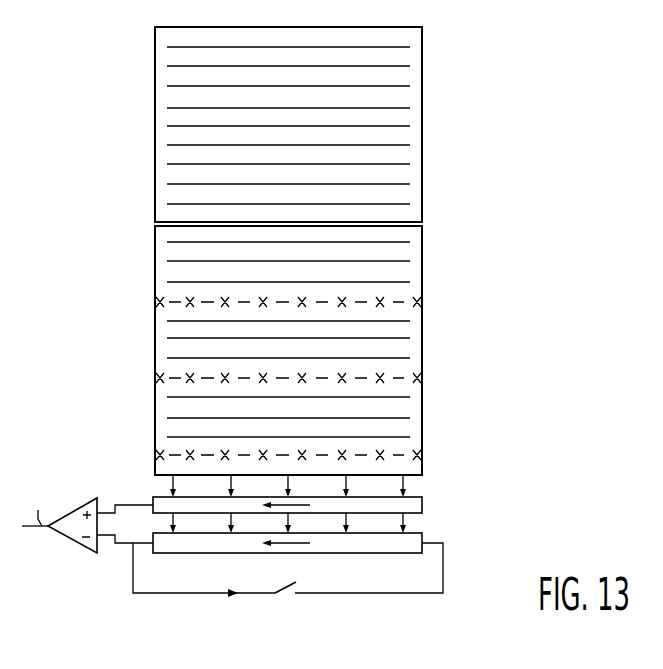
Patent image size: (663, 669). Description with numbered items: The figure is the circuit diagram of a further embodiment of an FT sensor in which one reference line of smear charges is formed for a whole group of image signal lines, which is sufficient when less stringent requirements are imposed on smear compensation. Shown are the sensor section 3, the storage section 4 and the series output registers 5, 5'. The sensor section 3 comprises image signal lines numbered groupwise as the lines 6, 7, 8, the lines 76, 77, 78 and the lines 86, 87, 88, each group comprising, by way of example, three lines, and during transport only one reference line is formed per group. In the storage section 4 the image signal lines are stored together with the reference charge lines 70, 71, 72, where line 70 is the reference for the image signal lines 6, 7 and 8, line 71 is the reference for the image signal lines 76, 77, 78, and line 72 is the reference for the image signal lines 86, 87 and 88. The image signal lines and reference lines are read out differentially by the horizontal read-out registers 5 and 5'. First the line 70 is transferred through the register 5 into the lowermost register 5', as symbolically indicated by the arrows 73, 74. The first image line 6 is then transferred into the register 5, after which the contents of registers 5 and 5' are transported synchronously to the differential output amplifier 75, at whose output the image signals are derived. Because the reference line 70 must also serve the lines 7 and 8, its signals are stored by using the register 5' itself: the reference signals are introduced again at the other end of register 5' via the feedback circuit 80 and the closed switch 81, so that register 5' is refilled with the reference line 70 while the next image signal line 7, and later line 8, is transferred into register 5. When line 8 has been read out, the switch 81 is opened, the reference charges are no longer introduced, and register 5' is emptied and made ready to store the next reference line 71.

The sensor section 3 is at (135, 143).
The storage section 4 is at (134, 359).
The image signal line 88 is at (410, 47).
The image signal line 87 is at (410, 66).
The image signal line 86 is at (412, 87).
The image signal line 78 is at (410, 108).
The image signal line 77 is at (410, 126).
The image signal line 76 is at (410, 145).
The image signal line 8 is at (410, 164).
The image signal line 7 is at (410, 184).
The first image line 6 is at (410, 204).
The reference charge line 72 is at (421, 302).
The reference charge line 71 is at (421, 378).
The reference charge line 70 is at (421, 455).
The arrow 73 is at (172, 486).
The arrow 74 is at (172, 521).
The series output register 5 is at (305, 498).
The series output register 5' is at (306, 534).
The differential output amplifier 75 is at (85, 541).
The feedback circuit 80 is at (163, 594).
The switch 81 is at (284, 595).